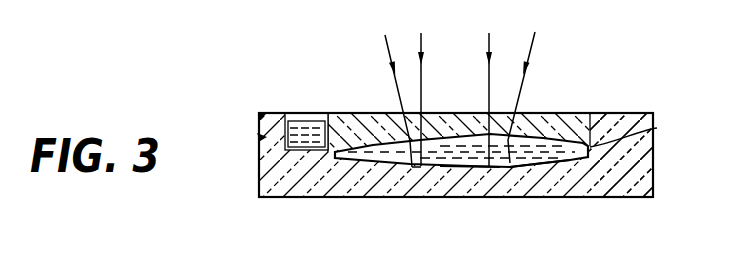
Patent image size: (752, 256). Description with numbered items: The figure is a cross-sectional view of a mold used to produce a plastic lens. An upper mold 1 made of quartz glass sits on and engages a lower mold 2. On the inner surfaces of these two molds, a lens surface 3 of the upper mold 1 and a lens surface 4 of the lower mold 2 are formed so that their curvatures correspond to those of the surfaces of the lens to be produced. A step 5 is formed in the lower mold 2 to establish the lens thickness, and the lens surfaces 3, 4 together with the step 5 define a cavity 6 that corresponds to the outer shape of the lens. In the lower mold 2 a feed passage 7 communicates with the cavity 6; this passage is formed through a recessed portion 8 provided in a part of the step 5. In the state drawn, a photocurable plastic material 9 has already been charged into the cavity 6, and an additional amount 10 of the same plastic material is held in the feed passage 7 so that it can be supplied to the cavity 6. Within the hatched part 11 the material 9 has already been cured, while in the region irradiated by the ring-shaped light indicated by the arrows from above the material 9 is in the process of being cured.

The upper mold 1 is at (587, 113).
The lower mold 2 is at (624, 172).
The lens surface 3 is at (355, 75).
The lens surface 4 is at (363, 158).
The step 5 is at (657, 128).
The cavity 6 is at (551, 165).
The feed passage 7 is at (253, 89).
The recessed portion 8 is at (307, 216).
The photocurable plastic material 9 is at (539, 140).
The additional amount of plastic material 10 is at (241, 128).
The hatched part 11 is at (467, 168).